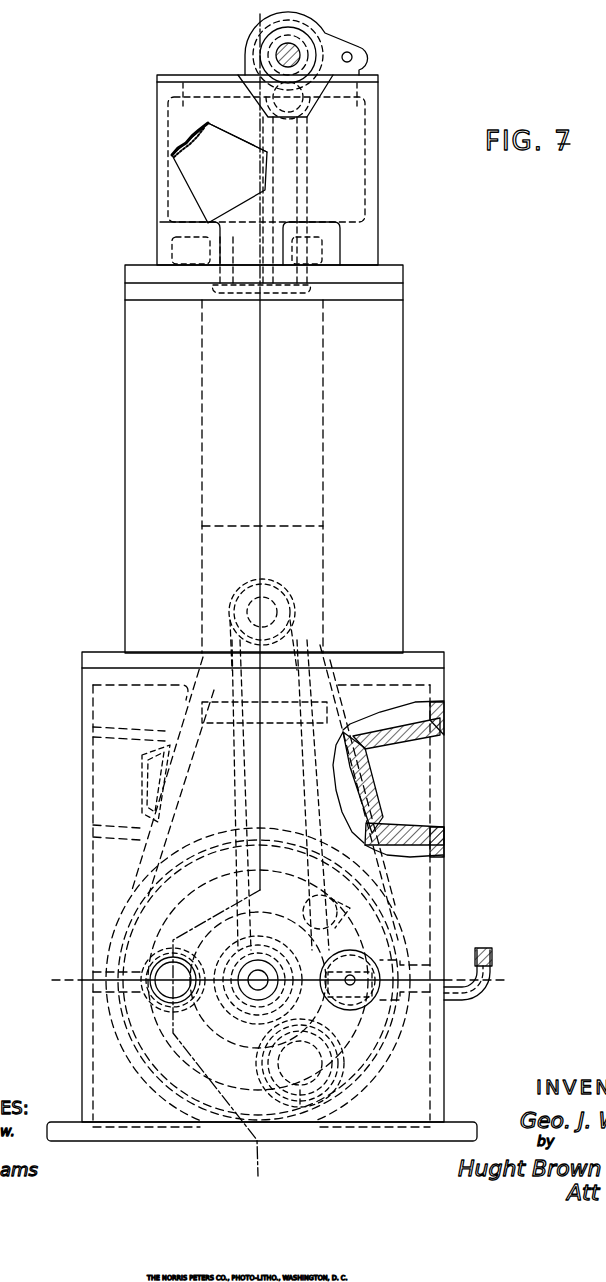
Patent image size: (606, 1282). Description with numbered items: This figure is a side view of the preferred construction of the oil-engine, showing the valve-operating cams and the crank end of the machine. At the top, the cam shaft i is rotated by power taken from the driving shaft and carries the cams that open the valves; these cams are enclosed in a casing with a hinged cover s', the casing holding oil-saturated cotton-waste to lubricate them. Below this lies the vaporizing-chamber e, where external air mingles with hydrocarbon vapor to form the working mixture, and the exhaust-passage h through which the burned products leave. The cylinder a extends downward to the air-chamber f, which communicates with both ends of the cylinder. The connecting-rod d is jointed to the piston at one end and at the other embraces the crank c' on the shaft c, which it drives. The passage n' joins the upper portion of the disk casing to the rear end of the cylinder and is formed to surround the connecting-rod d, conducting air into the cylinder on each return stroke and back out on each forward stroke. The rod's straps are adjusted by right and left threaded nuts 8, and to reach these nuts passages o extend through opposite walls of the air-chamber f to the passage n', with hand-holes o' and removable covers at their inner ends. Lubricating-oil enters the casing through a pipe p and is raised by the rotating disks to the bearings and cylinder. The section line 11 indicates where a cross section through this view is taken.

The hinged cover s' is at (288, 65).
The shaft i is at (276, 55).
The right and left threaded nuts 8 is at (219, 600).
The vaporizing-chamber e is at (353, 178).
The exhaust-passage h is at (265, 190).
The cylinder a is at (403, 426).
The connecting-rod d is at (233, 788).
The passages o is at (254, 896).
The air-chamber f is at (418, 717).
The passage n' is at (404, 822).
The openings or hand-holes o' is at (342, 787).
The pipe p is at (492, 955).
The section line 11 11 is at (278, 982).
The shaft c is at (290, 991).
The crank c' is at (300, 1095).